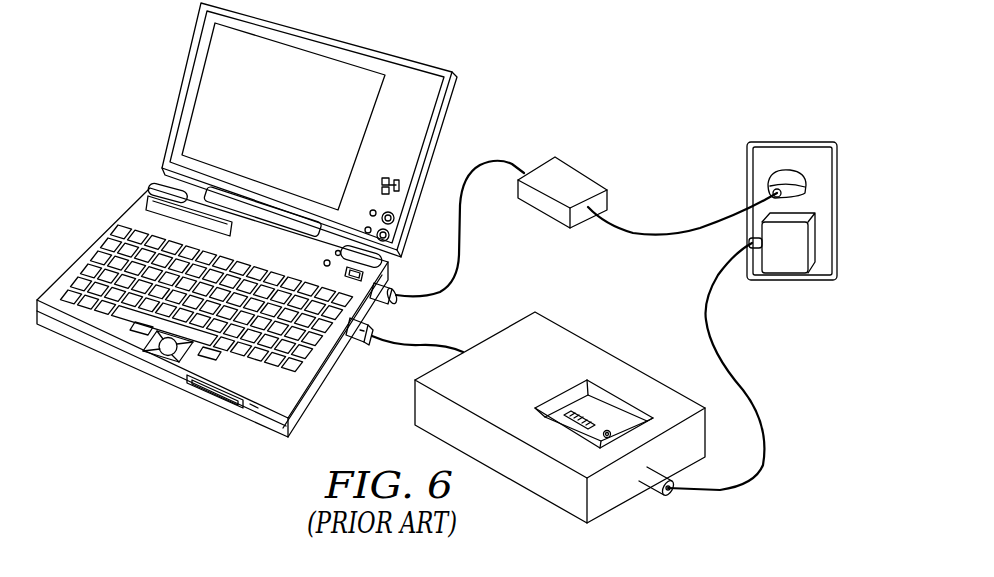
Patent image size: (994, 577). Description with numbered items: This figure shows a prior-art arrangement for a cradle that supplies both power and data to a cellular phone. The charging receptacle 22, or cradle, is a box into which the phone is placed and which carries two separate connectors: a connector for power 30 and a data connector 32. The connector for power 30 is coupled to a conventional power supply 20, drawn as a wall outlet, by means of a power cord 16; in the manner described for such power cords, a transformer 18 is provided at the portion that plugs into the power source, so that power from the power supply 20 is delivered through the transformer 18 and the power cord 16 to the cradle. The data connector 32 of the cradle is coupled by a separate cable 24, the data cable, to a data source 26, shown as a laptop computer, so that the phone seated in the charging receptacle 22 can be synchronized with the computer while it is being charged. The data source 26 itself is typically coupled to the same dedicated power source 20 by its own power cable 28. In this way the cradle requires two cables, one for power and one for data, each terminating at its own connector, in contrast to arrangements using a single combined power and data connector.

The power cord 16 is at (768, 440).
The transformer 18 is at (563, 170).
The conventional power supply 20 is at (790, 169).
The charging receptacle 22 is at (560, 409).
The data cable 24 is at (393, 349).
The data source 26 is at (302, 131).
The power cable 28 is at (673, 234).
The connector for power 30 is at (573, 411).
The data connector 32 is at (610, 431).